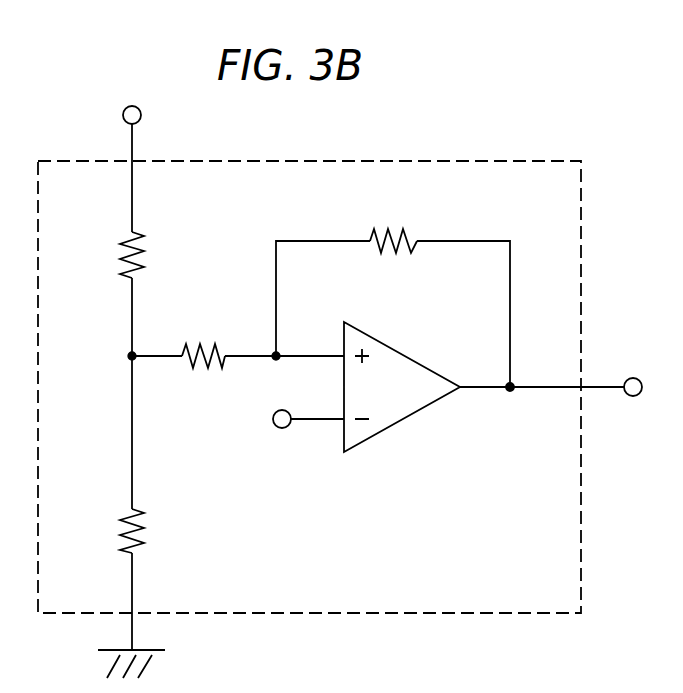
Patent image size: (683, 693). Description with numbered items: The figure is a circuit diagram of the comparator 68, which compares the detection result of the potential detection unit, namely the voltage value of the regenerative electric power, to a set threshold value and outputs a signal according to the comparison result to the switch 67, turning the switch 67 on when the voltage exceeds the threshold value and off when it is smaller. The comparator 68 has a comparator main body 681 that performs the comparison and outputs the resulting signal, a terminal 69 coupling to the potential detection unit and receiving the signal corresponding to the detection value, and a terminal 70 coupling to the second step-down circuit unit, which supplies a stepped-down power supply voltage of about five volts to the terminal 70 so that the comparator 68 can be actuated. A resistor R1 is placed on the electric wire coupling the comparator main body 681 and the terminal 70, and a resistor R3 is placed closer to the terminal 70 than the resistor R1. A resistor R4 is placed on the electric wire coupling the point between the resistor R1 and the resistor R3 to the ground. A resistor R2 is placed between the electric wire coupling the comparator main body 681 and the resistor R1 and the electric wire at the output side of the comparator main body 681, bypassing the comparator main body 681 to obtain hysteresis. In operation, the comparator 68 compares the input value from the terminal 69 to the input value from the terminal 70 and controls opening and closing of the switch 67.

The switch 67 is at (633, 378).
The comparator 68 is at (465, 160).
The terminal 69 is at (282, 429).
The terminal 70 is at (123, 114).
The comparator main body 681 is at (410, 420).
The resistor R1 is at (238, 341).
The resistor R2 is at (393, 294).
The resistor R3 is at (112, 255).
The resistor R4 is at (112, 531).